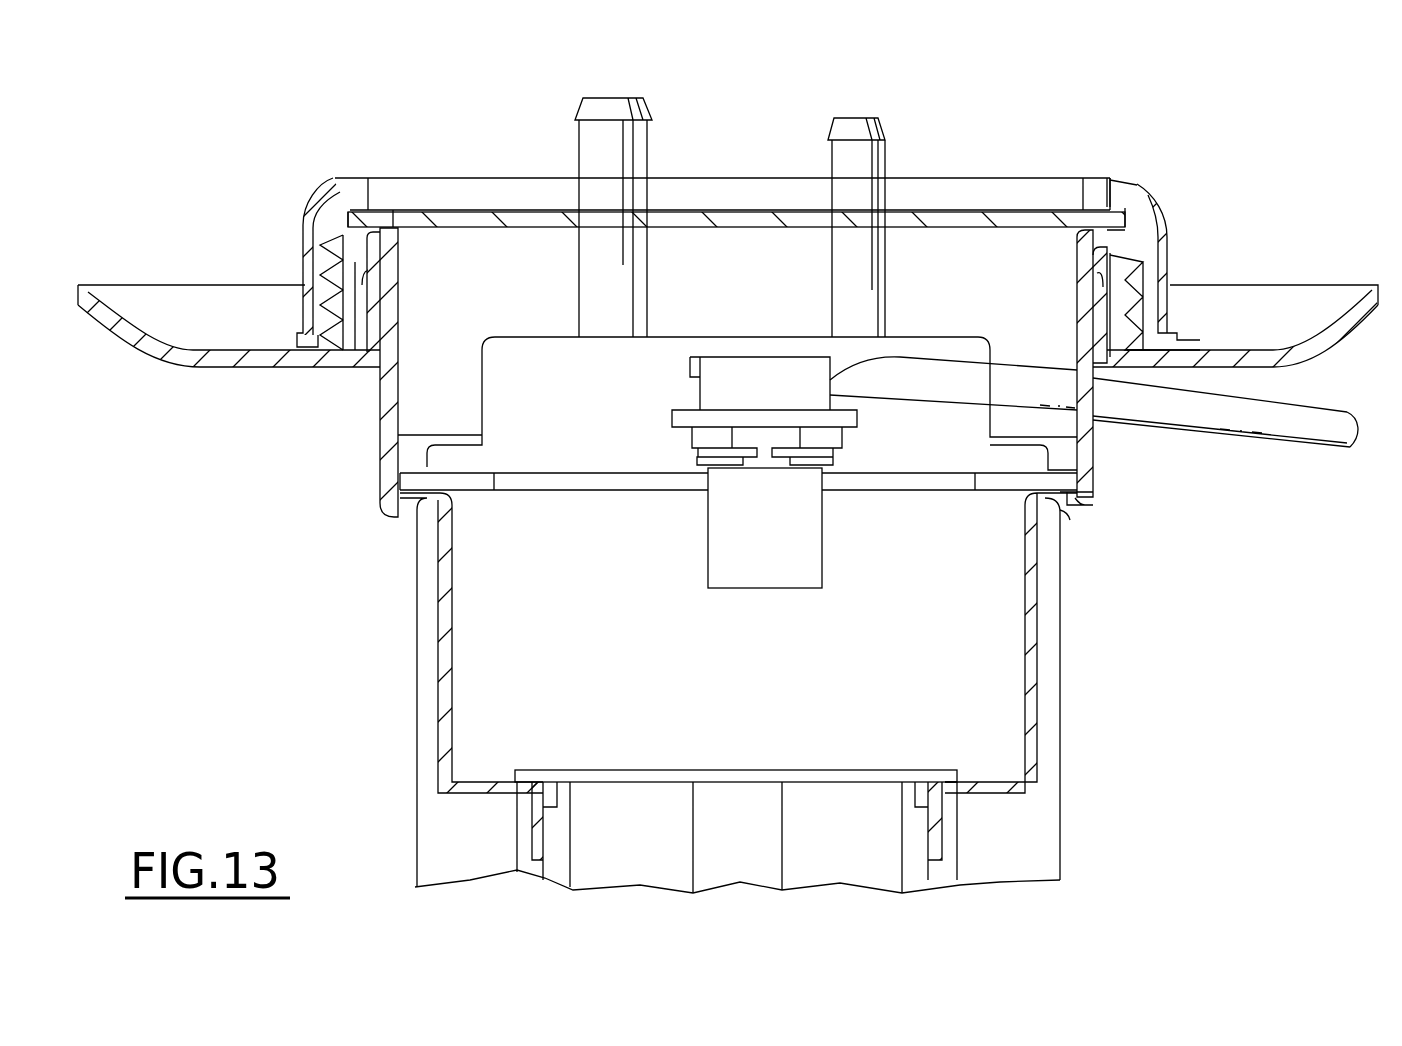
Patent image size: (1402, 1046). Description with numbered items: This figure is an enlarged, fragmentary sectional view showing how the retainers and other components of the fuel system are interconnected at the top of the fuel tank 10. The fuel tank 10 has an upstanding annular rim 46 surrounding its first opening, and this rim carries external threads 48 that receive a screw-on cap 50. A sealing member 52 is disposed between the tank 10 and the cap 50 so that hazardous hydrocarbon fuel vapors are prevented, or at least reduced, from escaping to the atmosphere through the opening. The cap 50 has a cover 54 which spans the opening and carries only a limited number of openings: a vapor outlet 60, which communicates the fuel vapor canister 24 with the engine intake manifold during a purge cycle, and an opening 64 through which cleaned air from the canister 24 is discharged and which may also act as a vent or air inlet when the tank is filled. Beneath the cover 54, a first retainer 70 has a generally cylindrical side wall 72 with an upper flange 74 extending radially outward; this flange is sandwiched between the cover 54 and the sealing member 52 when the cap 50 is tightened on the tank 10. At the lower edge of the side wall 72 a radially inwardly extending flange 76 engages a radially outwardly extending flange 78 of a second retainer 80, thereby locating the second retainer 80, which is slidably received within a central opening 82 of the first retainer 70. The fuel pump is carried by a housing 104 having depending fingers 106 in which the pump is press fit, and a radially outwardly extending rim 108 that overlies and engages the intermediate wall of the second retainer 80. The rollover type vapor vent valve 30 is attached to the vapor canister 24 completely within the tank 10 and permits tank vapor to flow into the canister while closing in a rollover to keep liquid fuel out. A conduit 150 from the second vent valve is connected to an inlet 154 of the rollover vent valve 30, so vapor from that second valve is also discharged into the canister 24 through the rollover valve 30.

The fuel tank 10 is at (1298, 293).
The fuel vapor canister 24 is at (507, 345).
The rollover type vapor vent valve 30 is at (815, 533).
The upstanding annular rim 46 is at (1112, 305).
The external threads 48 is at (1145, 272).
The screw-on cap 50 is at (1175, 187).
The sealing member 52 is at (1137, 240).
The cover 54 is at (985, 215).
The vapor outlet 60 is at (578, 110).
The opening 64 is at (885, 132).
The first retainer 70 is at (1100, 481).
The side wall 72 is at (1093, 453).
The upper flange 74 is at (1110, 238).
The radially inwardly extending flange 76 is at (1067, 515).
The radially outwardly extending flange 78 is at (1093, 502).
The second retainer 80 is at (1037, 622).
The central opening 82 is at (1033, 543).
The housing 104 is at (793, 770).
The depending fingers 106 is at (772, 830).
The radially outwardly extending rim 108 is at (958, 777).
The conduit 150 is at (1275, 432).
The inlet 154 is at (830, 382).